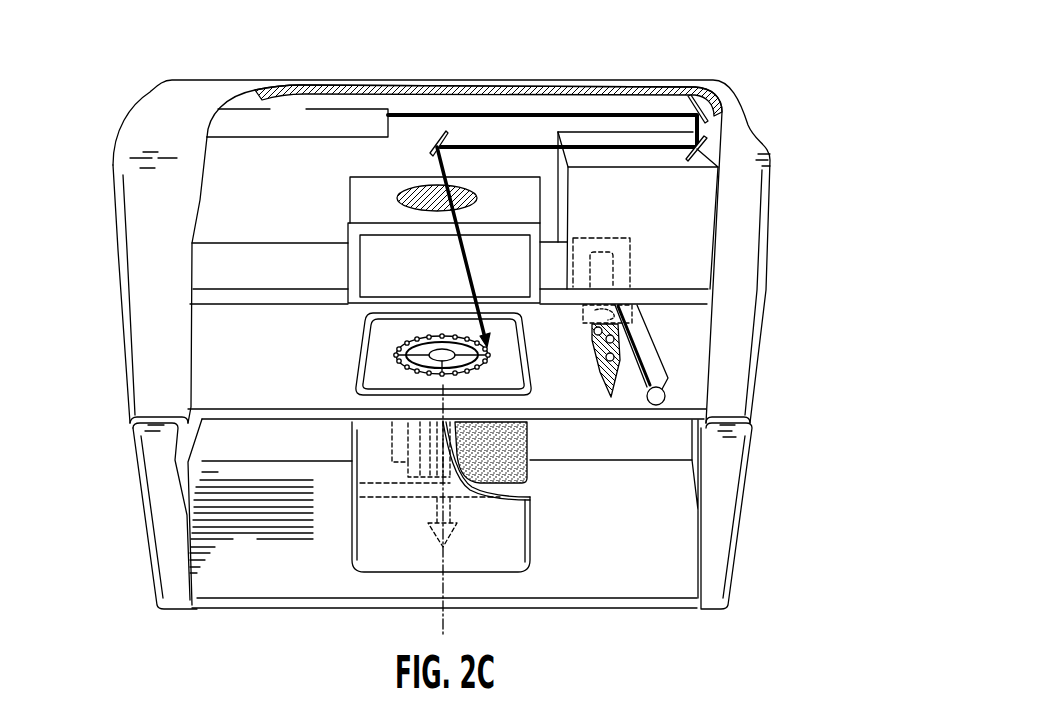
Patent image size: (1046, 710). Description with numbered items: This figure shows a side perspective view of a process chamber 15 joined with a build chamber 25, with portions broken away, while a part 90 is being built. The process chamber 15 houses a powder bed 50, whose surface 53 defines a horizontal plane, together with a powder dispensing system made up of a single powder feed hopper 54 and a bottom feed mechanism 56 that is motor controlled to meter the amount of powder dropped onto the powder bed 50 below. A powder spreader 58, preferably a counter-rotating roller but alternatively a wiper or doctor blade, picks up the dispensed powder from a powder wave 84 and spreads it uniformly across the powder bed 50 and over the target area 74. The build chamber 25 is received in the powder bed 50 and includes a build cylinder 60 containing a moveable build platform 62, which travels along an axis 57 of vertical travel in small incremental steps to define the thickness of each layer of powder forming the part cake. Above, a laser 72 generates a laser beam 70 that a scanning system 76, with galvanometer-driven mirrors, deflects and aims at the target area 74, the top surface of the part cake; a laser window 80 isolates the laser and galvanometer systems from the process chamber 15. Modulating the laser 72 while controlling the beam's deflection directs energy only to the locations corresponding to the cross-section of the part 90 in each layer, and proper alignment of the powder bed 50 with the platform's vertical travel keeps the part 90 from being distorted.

The process chamber 15 is at (117, 280).
The build chamber 25 is at (141, 507).
The powder bed 50 is at (210, 377).
The surface of the powder bed 53 is at (271, 371).
The powder feed hopper 54 is at (687, 223).
The bottom feed mechanism 56 is at (623, 329).
The axis of vertical travel 57 is at (445, 554).
The powder spreader 58 is at (667, 396).
The build cylinder 60 is at (530, 532).
The moveable build platform 62 is at (518, 485).
The laser beam 70 is at (465, 274).
The laser 72 is at (301, 131).
The target area 74 is at (378, 335).
The scanning system 76 is at (596, 102).
The laser window 80 is at (410, 185).
The powder wave 84 is at (617, 384).
The part 90 is at (393, 436).